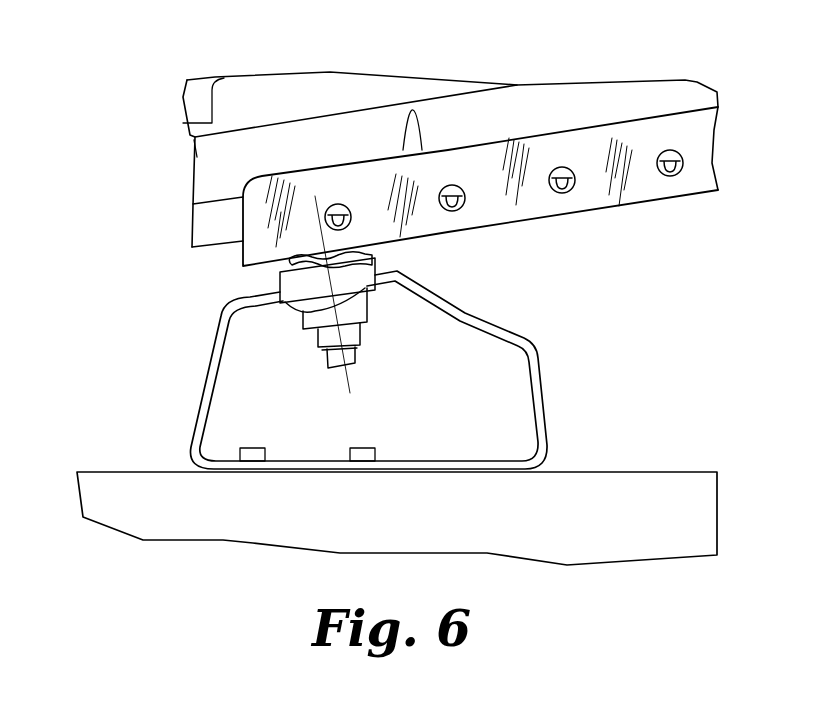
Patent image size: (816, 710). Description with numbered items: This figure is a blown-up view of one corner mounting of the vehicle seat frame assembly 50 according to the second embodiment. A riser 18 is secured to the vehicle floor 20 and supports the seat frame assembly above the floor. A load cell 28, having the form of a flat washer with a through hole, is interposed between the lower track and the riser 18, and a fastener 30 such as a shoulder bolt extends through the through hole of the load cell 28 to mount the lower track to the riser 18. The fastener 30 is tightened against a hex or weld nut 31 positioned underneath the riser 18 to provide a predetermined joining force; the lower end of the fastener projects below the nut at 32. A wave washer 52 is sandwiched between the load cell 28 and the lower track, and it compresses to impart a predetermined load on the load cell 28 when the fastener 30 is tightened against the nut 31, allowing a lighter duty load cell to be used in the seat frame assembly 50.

The riser 18 is at (548, 388).
The vehicle floor 20 is at (143, 470).
The load cell 28 is at (415, 274).
The fastener 30 is at (355, 335).
The nut 31 is at (370, 311).
The bolt shank end 32 is at (343, 372).
The vehicle seat frame assembly 50 is at (634, 286).
The wave washer 52 is at (357, 250).